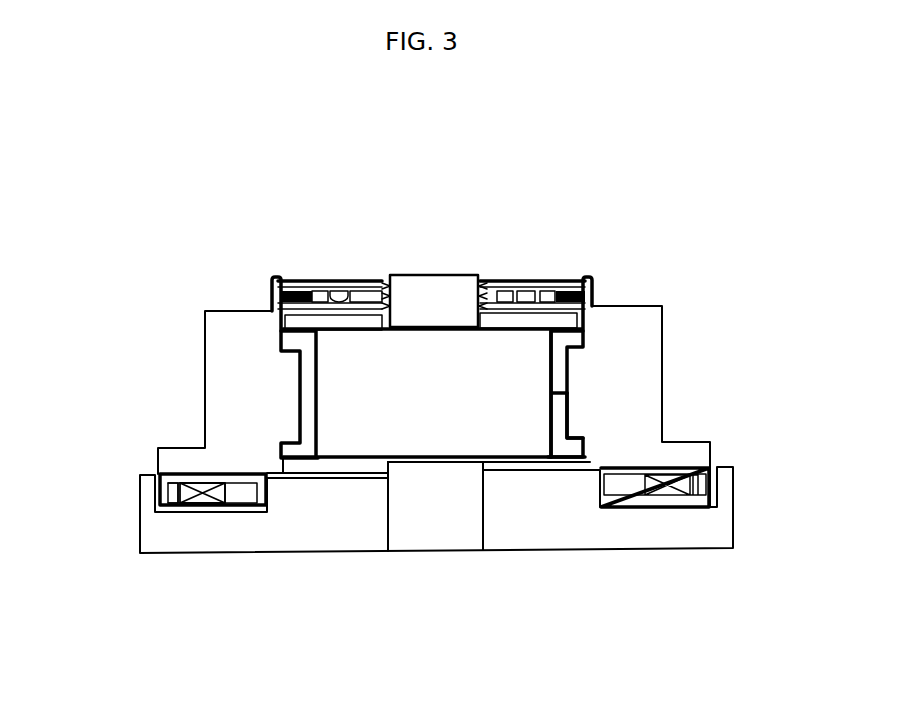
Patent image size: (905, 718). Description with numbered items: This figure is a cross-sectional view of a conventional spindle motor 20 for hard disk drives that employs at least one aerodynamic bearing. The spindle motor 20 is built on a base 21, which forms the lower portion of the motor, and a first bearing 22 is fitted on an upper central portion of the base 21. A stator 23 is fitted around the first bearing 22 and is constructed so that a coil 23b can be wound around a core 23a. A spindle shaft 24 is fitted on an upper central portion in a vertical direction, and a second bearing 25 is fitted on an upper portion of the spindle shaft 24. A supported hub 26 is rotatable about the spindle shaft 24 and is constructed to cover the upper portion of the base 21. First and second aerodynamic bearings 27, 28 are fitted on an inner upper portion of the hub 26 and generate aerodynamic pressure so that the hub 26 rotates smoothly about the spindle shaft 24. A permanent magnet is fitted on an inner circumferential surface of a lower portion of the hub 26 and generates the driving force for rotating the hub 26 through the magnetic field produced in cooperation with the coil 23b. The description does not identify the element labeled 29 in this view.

The spindle motor 20 is at (721, 344).
The base 21 is at (610, 520).
The first bearing 22 is at (525, 467).
The stator 23 is at (257, 483).
The core 23a is at (240, 490).
The coil 23b is at (196, 508).
The spindle shaft 24 is at (330, 401).
The second bearing 25 is at (505, 320).
The hub 26 is at (213, 341).
The first aerodynamic bearing 27 is at (560, 377).
The second aerodynamic bearing 28 is at (558, 435).
The coil holder 29 is at (700, 482).